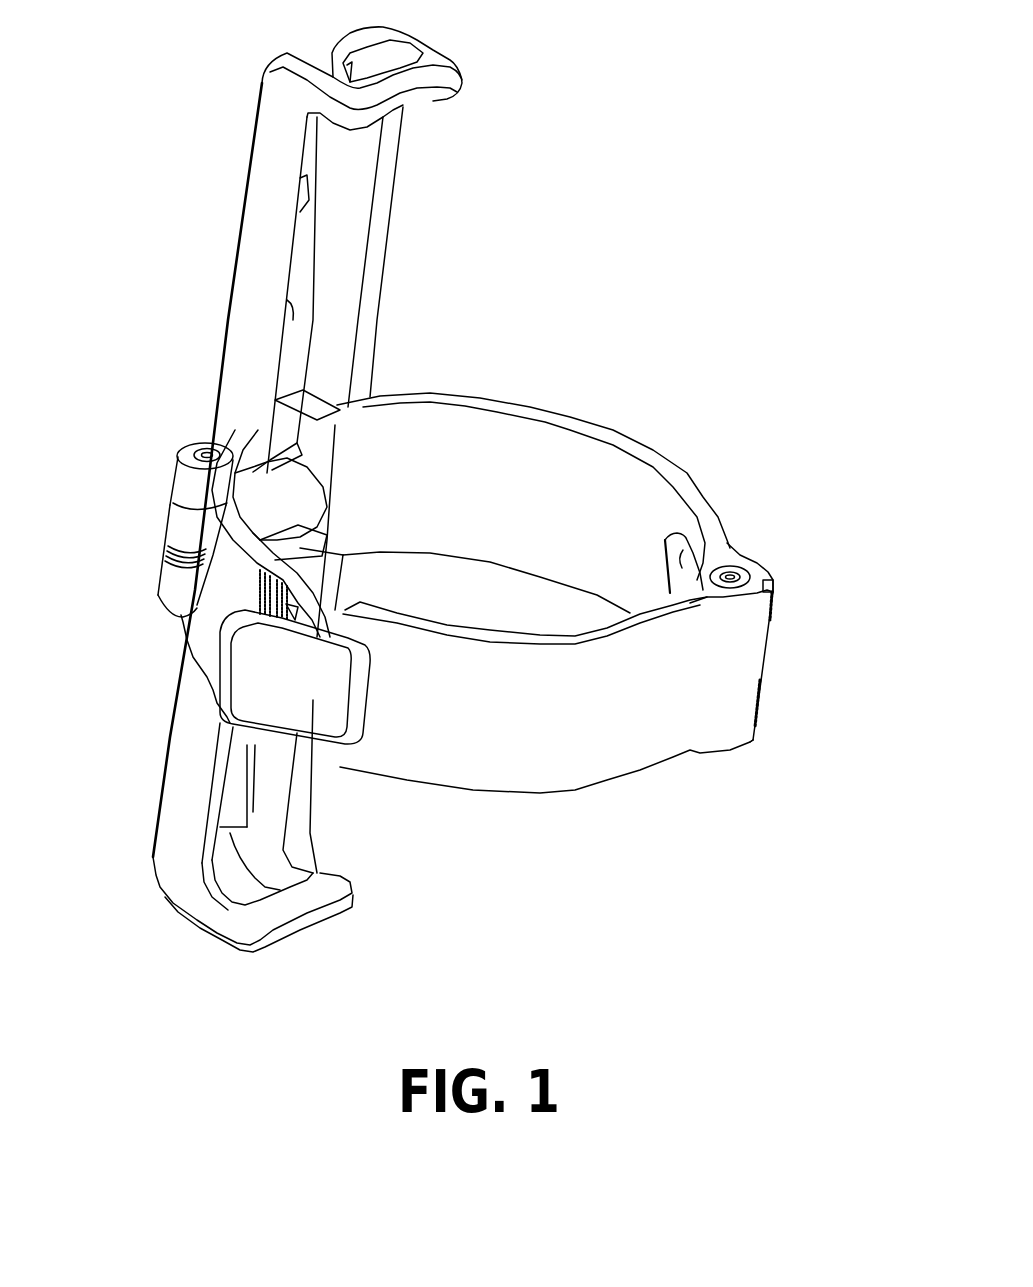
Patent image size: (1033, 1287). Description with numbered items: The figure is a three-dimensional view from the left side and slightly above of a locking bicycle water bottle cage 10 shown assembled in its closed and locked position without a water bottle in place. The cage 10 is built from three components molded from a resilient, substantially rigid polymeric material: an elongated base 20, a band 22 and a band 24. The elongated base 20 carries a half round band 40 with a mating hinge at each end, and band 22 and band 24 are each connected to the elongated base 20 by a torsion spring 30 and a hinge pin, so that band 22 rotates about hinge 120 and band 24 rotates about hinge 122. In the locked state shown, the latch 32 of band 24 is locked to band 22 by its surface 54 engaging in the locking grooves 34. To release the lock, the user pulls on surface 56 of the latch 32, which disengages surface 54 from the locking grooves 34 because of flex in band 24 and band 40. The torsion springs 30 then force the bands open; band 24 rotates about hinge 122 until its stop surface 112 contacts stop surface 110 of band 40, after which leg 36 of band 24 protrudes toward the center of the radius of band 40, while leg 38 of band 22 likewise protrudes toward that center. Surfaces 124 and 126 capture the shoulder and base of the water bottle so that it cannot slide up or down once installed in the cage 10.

The locking bicycle water bottle cage 10 is at (762, 125).
The elongated base 20 is at (393, 213).
The band 22 is at (227, 597).
The band 24 is at (505, 732).
The torsion spring 30 is at (167, 557).
The latch 32 is at (320, 745).
The locking grooves 34 is at (227, 622).
The leg 36 is at (680, 540).
The leg 38 is at (290, 497).
The half round band 40 is at (587, 485).
The surface 54 is at (290, 610).
The surface 56 is at (222, 657).
The stop surface 110 is at (775, 582).
The stop surface 112 is at (753, 740).
The hinge 120 is at (167, 520).
The hinge 122 is at (780, 650).
The surface 124 is at (433, 103).
The surface 126 is at (250, 907).